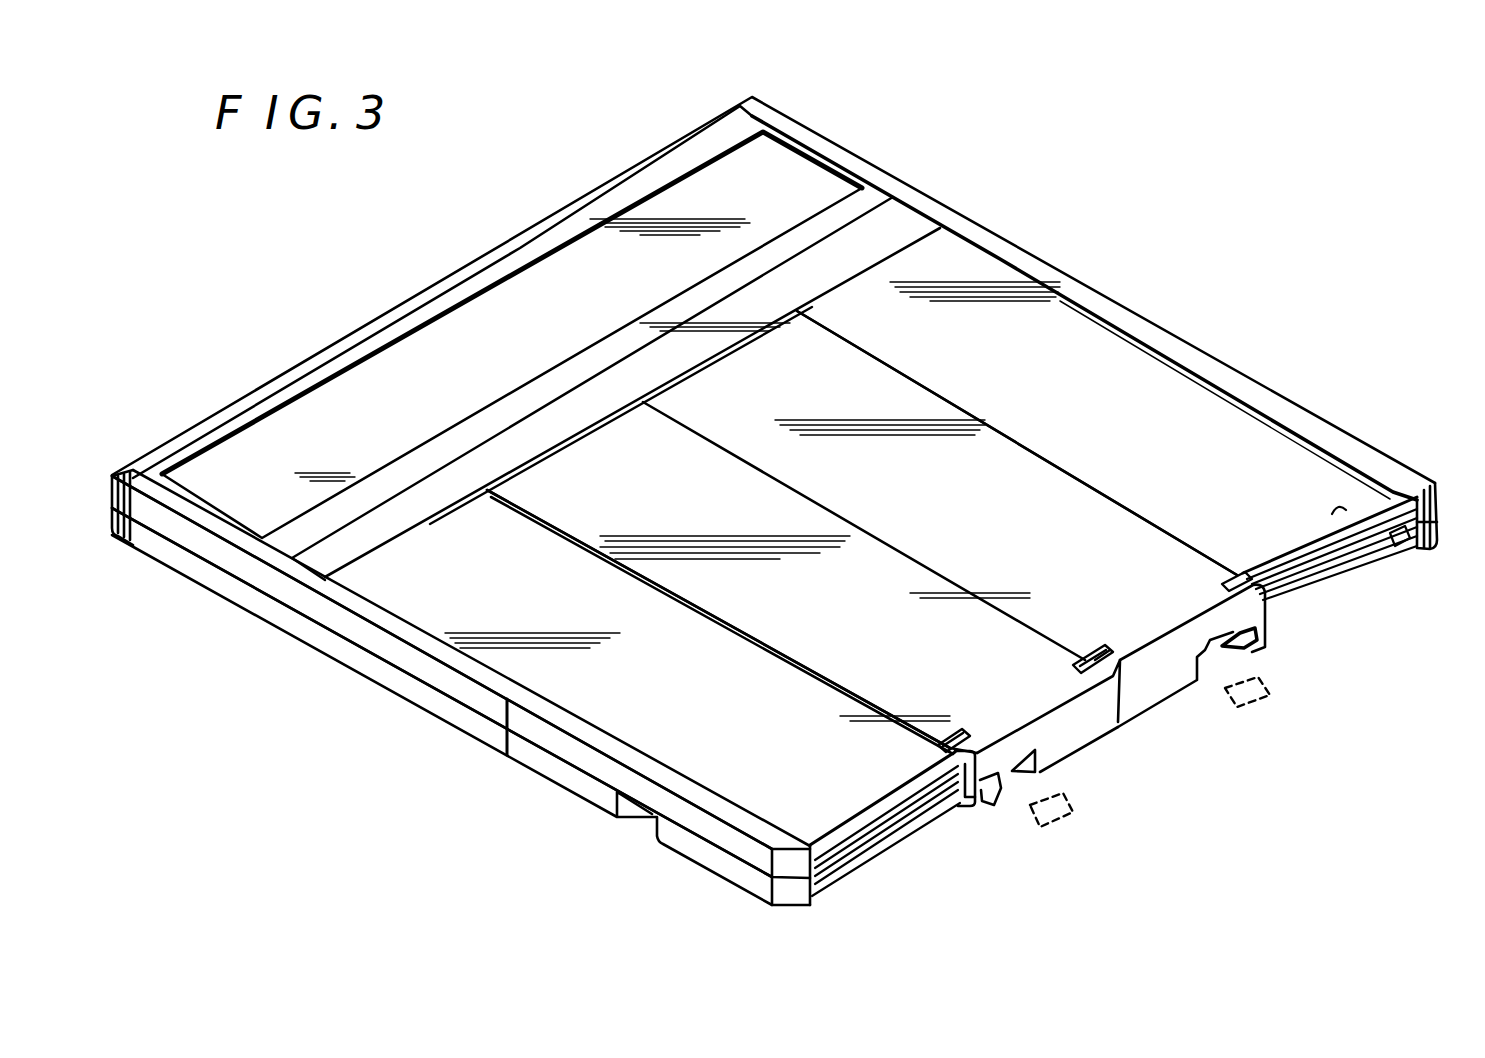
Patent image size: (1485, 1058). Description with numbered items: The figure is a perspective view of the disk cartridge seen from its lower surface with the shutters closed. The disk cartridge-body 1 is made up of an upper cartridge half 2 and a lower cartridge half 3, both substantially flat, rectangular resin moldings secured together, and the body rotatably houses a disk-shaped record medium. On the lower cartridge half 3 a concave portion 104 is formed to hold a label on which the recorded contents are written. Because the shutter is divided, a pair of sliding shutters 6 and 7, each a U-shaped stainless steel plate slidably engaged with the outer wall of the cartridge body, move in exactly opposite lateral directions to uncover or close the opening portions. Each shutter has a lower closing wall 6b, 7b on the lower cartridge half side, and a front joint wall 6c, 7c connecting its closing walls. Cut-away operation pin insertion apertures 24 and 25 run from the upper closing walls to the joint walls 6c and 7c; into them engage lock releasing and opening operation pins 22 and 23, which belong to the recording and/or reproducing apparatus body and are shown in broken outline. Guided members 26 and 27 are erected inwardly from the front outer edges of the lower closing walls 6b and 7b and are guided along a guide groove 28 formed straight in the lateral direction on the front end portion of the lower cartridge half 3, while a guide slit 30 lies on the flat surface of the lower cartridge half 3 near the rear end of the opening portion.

The disk cartridge-body 1 is at (263, 697).
The upper cartridge half 2 is at (257, 603).
The lower cartridge half 3 is at (325, 610).
The concave portion 104 is at (780, 165).
The guide slit 30 is at (413, 530).
The sliding shutter 6 is at (825, 680).
The lower closing wall 6b is at (760, 633).
The joint wall 6c is at (1092, 735).
The sliding shutter 7 is at (1108, 506).
The lower closing wall 7b is at (1013, 470).
The joint wall 7c is at (1168, 685).
The lock releasing and opening operation pin 22 is at (1047, 817).
The lock releasing and opening operation pin 23 is at (1240, 703).
The operation pin insertion aperture 24 is at (1013, 776).
The operation pin insertion aperture 25 is at (1258, 649).
The guided member 26 is at (946, 738).
The guided member 27 is at (1240, 574).
The guide groove 28 is at (1342, 514).